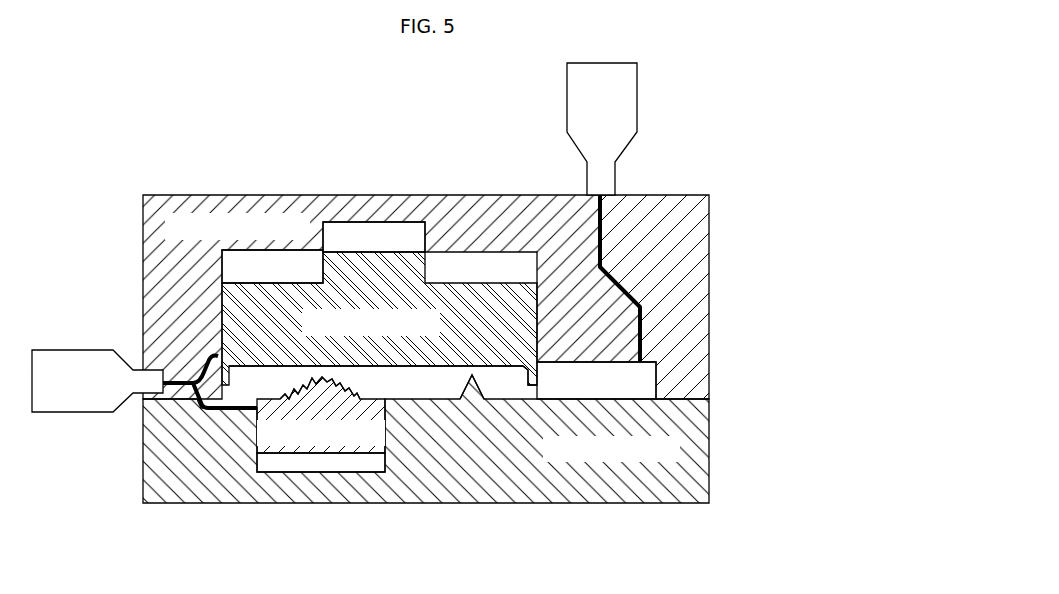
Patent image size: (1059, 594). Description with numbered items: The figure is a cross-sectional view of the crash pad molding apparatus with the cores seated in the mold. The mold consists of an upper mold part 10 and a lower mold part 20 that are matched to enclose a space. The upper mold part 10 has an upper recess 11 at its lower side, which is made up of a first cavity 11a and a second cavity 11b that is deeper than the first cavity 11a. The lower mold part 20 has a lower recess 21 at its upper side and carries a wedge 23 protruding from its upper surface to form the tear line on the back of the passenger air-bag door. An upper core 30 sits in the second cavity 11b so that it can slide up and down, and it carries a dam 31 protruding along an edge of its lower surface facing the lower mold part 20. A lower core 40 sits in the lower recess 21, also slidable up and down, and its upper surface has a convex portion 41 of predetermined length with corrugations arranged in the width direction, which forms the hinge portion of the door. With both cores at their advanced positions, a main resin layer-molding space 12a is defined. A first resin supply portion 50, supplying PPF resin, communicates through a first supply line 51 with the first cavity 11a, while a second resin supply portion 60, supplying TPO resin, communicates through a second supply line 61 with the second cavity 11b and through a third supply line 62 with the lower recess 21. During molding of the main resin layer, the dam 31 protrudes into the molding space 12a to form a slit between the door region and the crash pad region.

The upper mold part 10 is at (692, 347).
The upper recess 11 is at (377, 227).
The first cavity 11a is at (637, 380).
The second cavity 11b is at (237, 265).
The main resin layer-molding space 12a is at (433, 388).
The lower mold part 20 is at (690, 473).
The lower recess 21 is at (317, 468).
The wedge 23 is at (478, 388).
The upper core 30 is at (240, 303).
The dam 31 is at (530, 387).
The lower core 40 is at (278, 452).
The convex portion 41 is at (365, 385).
The first resin supply portion 50 is at (632, 82).
The first supply line 51 is at (641, 300).
The second resin supply portion 60 is at (73, 410).
The second supply line 61 is at (205, 357).
The third supply line 62 is at (200, 410).